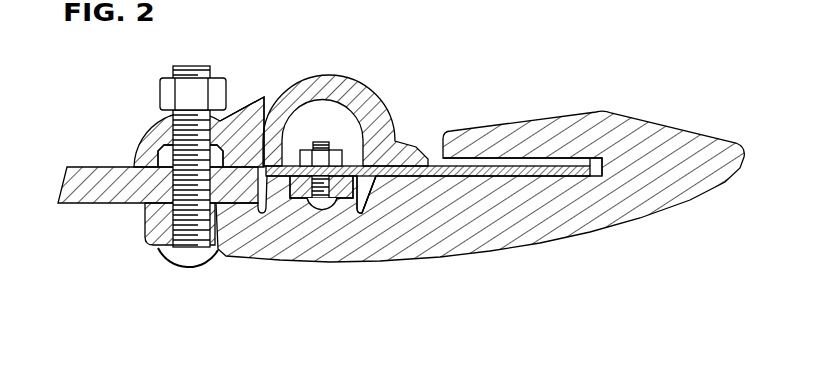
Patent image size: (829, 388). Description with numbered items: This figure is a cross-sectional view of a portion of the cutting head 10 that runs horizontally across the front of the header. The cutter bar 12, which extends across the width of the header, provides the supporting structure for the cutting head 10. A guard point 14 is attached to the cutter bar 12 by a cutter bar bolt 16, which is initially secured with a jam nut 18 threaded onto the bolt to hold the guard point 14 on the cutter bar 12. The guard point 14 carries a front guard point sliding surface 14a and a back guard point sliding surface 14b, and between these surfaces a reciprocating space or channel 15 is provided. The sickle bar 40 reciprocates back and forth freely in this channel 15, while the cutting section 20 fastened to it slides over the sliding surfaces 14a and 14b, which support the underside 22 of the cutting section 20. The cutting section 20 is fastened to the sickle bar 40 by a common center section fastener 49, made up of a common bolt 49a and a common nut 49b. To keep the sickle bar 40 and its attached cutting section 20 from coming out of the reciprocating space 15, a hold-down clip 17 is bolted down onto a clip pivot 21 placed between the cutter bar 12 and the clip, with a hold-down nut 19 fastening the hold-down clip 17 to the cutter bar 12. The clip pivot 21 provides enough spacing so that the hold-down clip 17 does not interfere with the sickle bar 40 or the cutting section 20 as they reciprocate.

The cutting head 10 is at (391, 165).
The cutter bar 12 is at (78, 167).
The guard point 14 is at (654, 147).
The front guard point sliding surface 14a is at (594, 158).
The back guard point sliding surface 14b is at (271, 157).
The reciprocating space or channel 15 is at (336, 216).
The cutter bar bolt 16 is at (199, 268).
The hold-down clip 17 is at (316, 79).
The jam nut 18 is at (163, 155).
The hold-down nut 19 is at (165, 95).
The cutting section 20 is at (456, 166).
The clip pivot 21 is at (147, 156).
The underside of cutting section 22 is at (359, 207).
The sickle bar 40 is at (372, 193).
The common center section fastener 49 is at (336, 183).
The common bolt 49a is at (313, 205).
The common nut 49b is at (337, 163).